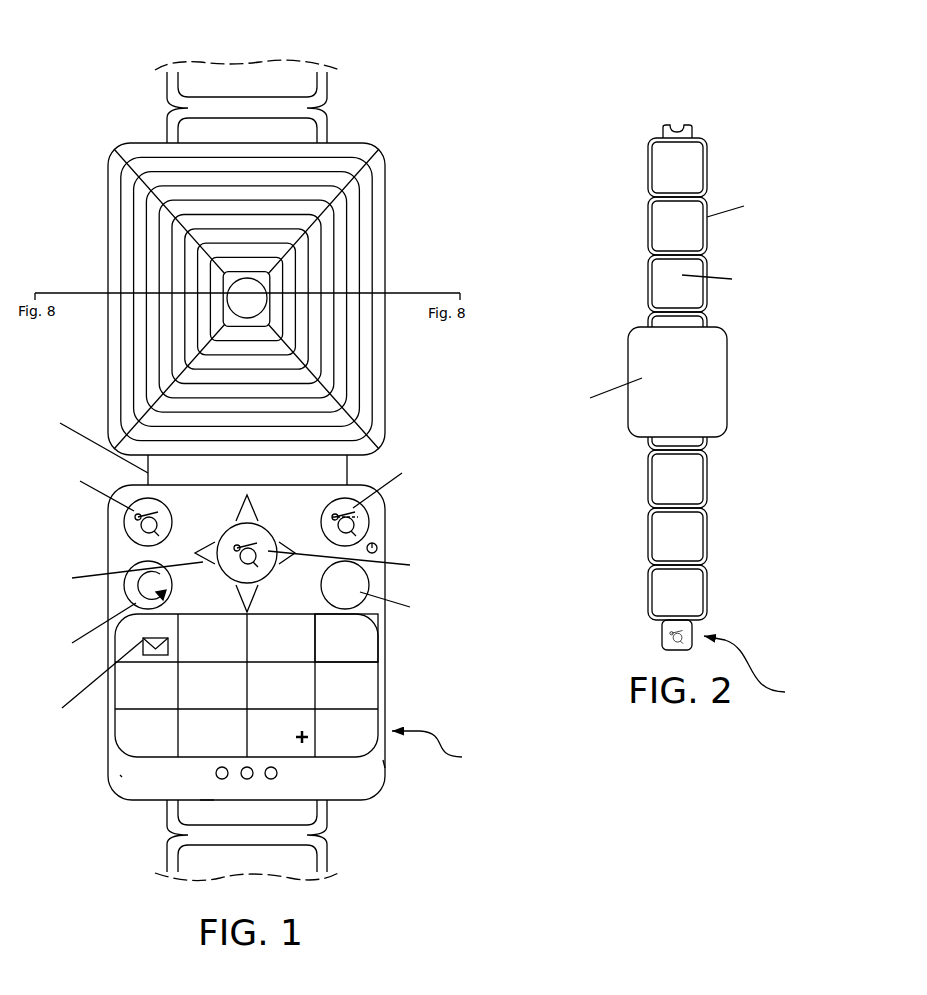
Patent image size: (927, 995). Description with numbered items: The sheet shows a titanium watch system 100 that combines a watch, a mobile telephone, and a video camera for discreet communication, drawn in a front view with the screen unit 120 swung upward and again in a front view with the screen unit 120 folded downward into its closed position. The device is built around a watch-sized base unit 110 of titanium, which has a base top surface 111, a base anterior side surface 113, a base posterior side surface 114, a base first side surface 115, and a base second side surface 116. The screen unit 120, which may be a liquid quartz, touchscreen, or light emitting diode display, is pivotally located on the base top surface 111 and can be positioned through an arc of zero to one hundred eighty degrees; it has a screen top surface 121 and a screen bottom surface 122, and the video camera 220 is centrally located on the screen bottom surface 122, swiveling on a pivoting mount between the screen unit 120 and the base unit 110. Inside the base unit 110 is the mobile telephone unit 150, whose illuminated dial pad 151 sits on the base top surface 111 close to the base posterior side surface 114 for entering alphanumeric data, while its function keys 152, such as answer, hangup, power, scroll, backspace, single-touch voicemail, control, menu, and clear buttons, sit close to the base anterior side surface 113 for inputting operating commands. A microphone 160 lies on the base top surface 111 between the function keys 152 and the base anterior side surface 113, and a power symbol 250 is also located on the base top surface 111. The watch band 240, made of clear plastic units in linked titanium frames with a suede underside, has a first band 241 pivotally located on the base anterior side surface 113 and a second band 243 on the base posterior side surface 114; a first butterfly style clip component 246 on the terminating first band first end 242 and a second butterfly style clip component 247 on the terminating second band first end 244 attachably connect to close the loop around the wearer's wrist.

In FIG. 1, the titanium watch system 100 is at (378, 113).
In FIG. 2, the titanium watch system 100 is at (690, 105).
In FIG. 1, the base unit 110 is at (383, 791).
In FIG. 2, the base unit 110 is at (729, 439).
In FIG. 1, the base top surface 111 is at (128, 771).
In FIG. 1, the base anterior side surface 113 is at (198, 485).
In FIG. 1, the base posterior side surface 114 is at (207, 801).
In FIG. 1, the base first side surface 115 is at (132, 594).
In FIG. 1, the base second side surface 116 is at (385, 768).
In FIG. 2, the screen unit 120 is at (727, 359).
In FIG. 2, the screen top surface 121 is at (690, 393).
In FIG. 1, the screen bottom surface 122 is at (342, 328).
In FIG. 1, the mobile telephone unit 150 is at (405, 704).
In FIG. 1, the illuminated dial pad 151 is at (367, 650).
In FIG. 1, the function keys 152 is at (205, 561).
In FIG. 1, the microphone 160 is at (213, 775).
In FIG. 1, the video camera 220 is at (267, 284).
In FIG. 1, the watch band 240 is at (205, 78).
In FIG. 1, the first band 241 is at (200, 128).
In FIG. 2, the first band 241 is at (660, 222).
In FIG. 2, the first band first end 242 is at (653, 140).
In FIG. 1, the second band 243 is at (215, 860).
In FIG. 2, the second band 243 is at (662, 530).
In FIG. 2, the second band first end 244 is at (649, 614).
In FIG. 2, the first butterfly style clip component 246 is at (694, 131).
In FIG. 2, the second butterfly style clip component 247 is at (693, 631).
In FIG. 1, the power symbol 250 is at (378, 549).